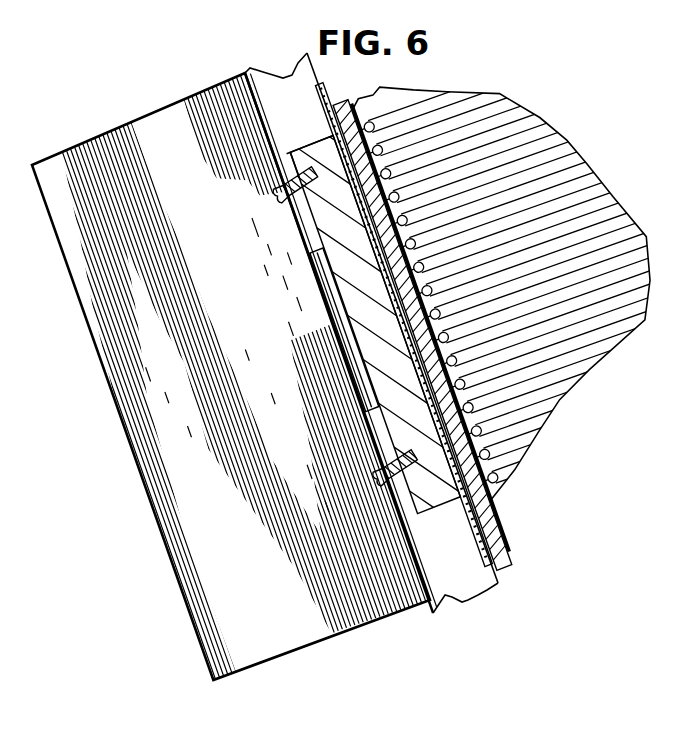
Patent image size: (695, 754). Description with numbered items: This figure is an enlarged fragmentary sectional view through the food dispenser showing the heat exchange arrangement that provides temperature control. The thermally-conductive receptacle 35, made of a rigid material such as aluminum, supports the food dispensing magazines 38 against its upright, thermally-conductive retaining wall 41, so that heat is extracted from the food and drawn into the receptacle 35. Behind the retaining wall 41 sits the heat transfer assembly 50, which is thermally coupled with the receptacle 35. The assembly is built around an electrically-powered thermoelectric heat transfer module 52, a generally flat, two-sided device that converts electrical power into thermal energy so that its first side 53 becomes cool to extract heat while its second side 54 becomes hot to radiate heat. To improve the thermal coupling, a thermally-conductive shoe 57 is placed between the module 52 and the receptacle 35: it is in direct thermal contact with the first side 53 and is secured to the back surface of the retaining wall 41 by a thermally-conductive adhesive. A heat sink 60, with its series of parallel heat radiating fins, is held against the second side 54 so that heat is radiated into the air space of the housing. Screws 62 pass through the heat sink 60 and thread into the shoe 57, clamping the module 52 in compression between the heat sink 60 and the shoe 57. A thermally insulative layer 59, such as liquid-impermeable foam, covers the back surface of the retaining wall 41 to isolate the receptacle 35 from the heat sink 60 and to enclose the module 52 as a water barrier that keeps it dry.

The thermally-conductive receptacle 35 is at (392, 140).
The magazines 38 is at (372, 104).
The retaining wall 41 is at (330, 86).
The heat transfer assembly 50 is at (103, 131).
The thermoelectric heat transfer module 52 is at (312, 252).
The first side 53 is at (348, 318).
The second side 54 is at (322, 290).
The thermally-conductive shoe 57 is at (318, 150).
The thermally insulative layer 59 is at (291, 83).
The heat sink 60 is at (181, 111).
The screws 62 is at (278, 186).